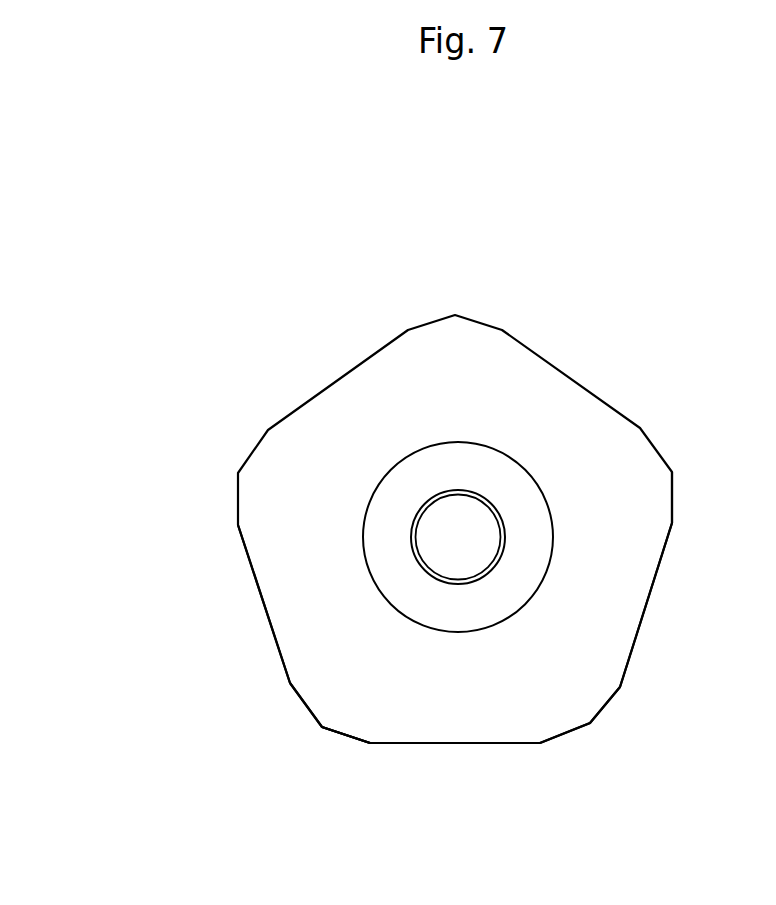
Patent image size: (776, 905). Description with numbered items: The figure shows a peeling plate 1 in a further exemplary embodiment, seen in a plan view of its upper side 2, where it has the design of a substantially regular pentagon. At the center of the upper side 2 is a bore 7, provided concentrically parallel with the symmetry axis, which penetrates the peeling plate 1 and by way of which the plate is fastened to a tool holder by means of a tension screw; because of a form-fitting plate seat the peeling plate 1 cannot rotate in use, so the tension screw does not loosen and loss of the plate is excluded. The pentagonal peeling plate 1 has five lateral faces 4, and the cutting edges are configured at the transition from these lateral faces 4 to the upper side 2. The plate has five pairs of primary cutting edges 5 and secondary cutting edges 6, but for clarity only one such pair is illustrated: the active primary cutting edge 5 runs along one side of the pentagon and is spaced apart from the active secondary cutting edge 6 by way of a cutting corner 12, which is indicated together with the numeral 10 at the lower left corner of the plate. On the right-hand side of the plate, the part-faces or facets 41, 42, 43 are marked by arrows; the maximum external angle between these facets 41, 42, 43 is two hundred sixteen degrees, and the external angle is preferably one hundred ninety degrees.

The peeling plate 1 is at (118, 440).
The upper side 2 is at (368, 465).
The bore 7 is at (466, 551).
The primary cutting edge 5 is at (222, 539).
The corner edge 10 is at (322, 727).
The cutting corner 12 is at (346, 735).
The secondary cutting edge 6 is at (337, 733).
The lateral face 4 is at (464, 790).
The part-face (facet) 41 is at (603, 707).
The part-face (facet) 42 is at (647, 603).
The part-face (facet) 43 is at (672, 497).